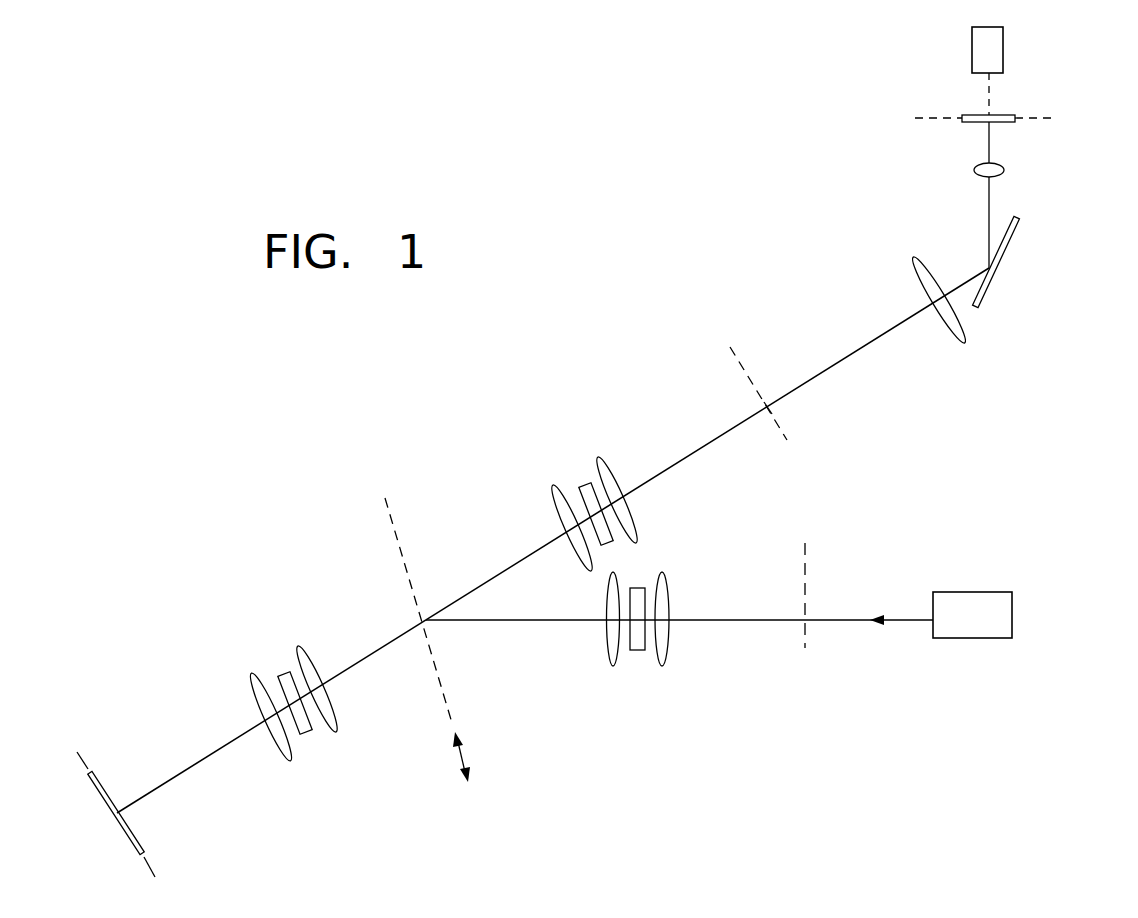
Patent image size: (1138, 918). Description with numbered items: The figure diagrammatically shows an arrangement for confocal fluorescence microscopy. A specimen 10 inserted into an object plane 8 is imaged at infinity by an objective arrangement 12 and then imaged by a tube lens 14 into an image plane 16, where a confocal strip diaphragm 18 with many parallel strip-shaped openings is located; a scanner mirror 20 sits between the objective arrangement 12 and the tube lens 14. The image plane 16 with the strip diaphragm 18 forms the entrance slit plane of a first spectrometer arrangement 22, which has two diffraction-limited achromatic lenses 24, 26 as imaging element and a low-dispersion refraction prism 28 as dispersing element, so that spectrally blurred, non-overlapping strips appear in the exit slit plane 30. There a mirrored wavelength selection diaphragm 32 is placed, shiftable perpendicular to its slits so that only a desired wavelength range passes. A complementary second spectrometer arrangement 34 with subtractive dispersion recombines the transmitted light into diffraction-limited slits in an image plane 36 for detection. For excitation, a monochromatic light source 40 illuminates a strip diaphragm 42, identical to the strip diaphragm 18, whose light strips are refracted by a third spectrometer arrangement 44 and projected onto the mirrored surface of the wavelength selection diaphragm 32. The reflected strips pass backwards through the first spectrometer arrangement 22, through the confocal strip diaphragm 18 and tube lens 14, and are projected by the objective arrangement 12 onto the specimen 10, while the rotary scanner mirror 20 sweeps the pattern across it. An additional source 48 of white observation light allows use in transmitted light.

The object plane 8 is at (972, 119).
The specimen 10 is at (1013, 113).
The objective arrangement 12 is at (975, 168).
The tube lens 14 is at (913, 258).
The image plane 16 is at (749, 378).
The confocal strip diaphragm 18 is at (775, 423).
The scanner mirror 20 is at (997, 268).
The first spectrometer arrangement 22 is at (545, 480).
The achromatic lens 24 is at (598, 457).
The achromatic lens 26 is at (552, 485).
The refraction prism 28 is at (583, 485).
The exit slit plane 30 is at (412, 594).
The wavelength selection diaphragm 32 is at (415, 585).
The second spectrometer arrangement 34 is at (287, 630).
The image plane 36 is at (109, 801).
The monochromatic light source 40 is at (972, 605).
The strip diaphragm 42 is at (807, 592).
The third spectrometer arrangement 44 is at (624, 691).
The additional source 48 is at (992, 48).